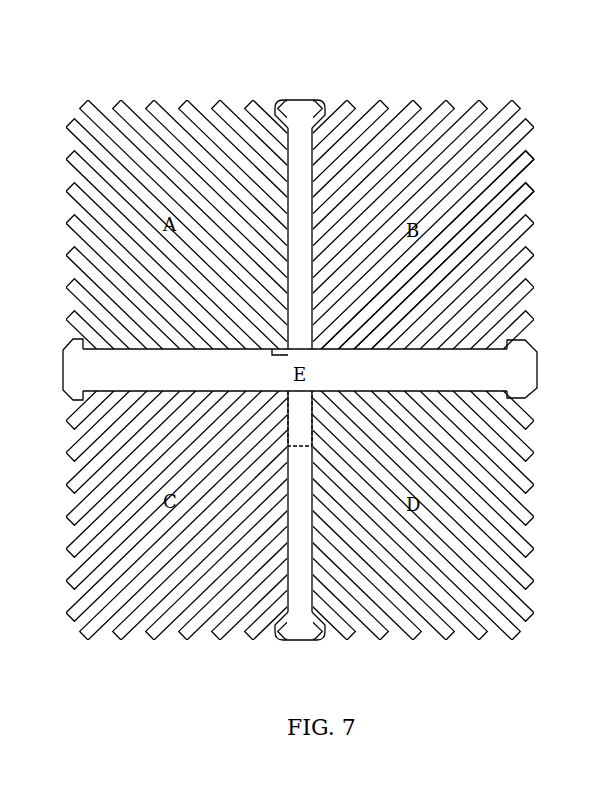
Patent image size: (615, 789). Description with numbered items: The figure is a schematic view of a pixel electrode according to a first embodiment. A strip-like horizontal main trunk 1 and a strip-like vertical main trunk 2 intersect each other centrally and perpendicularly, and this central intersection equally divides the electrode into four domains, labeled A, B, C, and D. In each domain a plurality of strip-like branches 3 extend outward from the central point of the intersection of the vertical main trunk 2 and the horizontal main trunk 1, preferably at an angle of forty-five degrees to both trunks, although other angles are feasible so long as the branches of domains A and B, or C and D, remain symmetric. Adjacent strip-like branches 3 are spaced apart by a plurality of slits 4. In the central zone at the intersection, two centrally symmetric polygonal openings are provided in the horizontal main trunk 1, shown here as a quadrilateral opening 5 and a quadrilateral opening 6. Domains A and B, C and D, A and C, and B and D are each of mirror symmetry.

The horizontal main trunk 1 is at (507, 377).
The vertical main trunk 2 is at (309, 112).
The strip-like branches 3 is at (510, 177).
The slits 4 is at (510, 220).
The quadrilateral opening 5 is at (319, 387).
The quadrilateral opening 6 is at (283, 350).